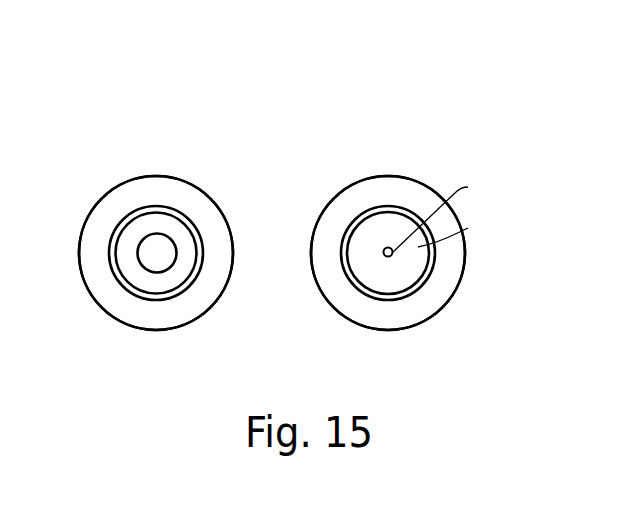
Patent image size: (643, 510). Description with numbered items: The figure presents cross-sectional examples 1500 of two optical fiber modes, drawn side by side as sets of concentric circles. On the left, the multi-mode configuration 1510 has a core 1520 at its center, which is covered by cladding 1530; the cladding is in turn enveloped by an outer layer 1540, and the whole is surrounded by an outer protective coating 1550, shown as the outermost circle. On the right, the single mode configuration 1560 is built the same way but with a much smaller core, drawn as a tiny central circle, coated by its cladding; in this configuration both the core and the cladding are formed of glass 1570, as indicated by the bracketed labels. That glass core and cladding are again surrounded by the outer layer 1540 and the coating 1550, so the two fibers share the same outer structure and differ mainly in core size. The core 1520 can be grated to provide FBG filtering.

The cross-sectional examples 1500 is at (352, 107).
The multi-mode configuration 1510 is at (156, 331).
The core 1520 is at (162, 252).
The cladding 1530 is at (187, 248).
The outer layer 1540 is at (203, 263).
The outer protective coating 1550 is at (195, 303).
The single mode configuration 1560 is at (388, 331).
The glass 1570 is at (573, 175).